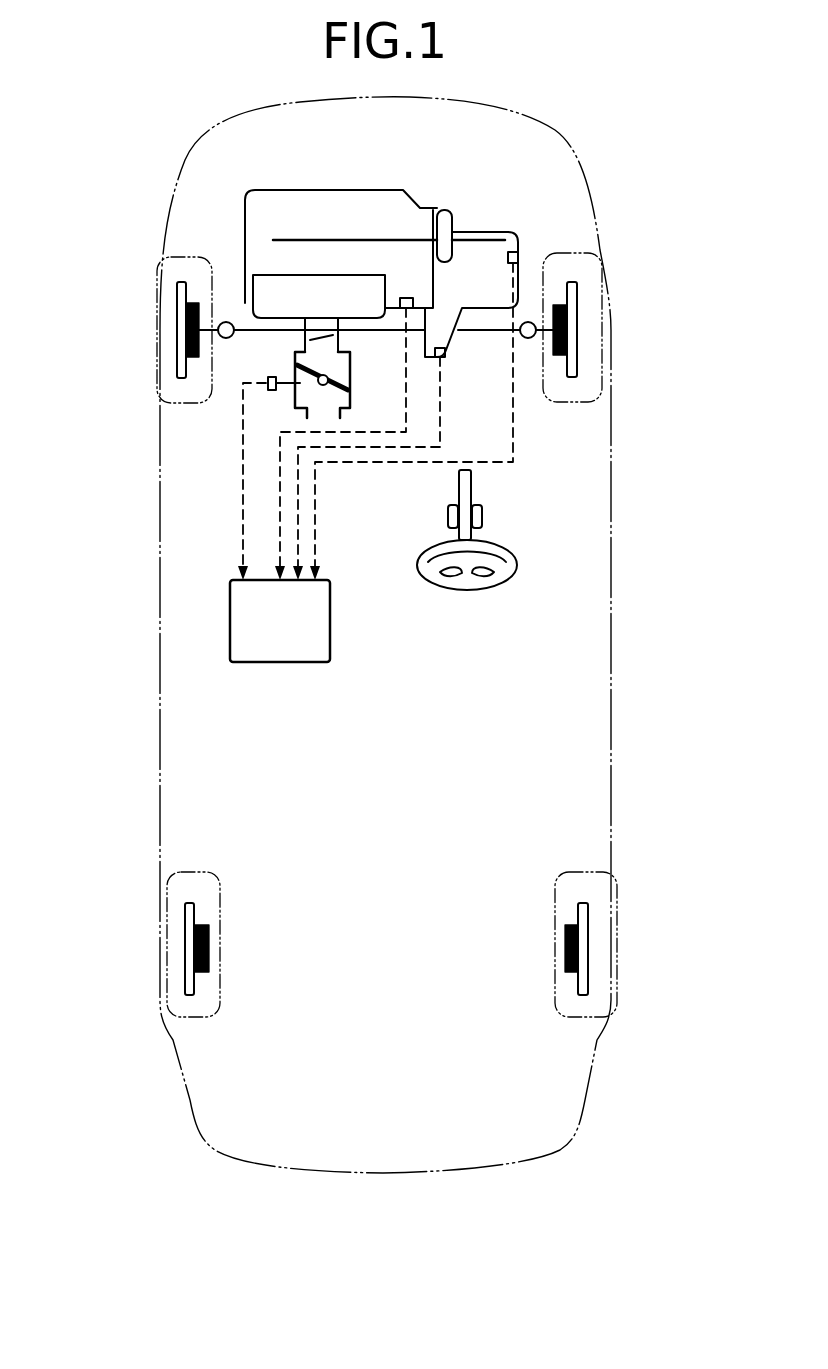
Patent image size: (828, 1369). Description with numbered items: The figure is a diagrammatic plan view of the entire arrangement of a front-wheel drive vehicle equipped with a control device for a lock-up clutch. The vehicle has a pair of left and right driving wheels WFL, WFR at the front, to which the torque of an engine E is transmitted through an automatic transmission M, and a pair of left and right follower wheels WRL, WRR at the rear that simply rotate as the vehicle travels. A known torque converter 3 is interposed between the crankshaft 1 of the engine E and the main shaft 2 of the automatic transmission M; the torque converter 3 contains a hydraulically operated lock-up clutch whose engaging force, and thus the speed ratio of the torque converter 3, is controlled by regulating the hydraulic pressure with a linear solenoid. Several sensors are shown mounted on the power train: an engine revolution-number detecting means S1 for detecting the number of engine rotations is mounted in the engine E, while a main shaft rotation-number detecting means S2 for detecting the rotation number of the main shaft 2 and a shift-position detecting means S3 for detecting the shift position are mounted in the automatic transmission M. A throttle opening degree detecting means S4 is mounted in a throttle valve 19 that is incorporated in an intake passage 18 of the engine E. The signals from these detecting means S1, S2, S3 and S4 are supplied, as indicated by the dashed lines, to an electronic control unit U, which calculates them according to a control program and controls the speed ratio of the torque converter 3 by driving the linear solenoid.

The crankshaft 1 is at (298, 238).
The main shaft 2 is at (465, 228).
The torque converter 3 is at (448, 212).
The intake passage 18 is at (300, 412).
The throttle valve 19 is at (330, 368).
The engine E is at (357, 182).
The automatic transmission M is at (480, 232).
The engine revolution-number detecting means S1 is at (405, 297).
The main shaft rotation-number detecting means S2 is at (508, 257).
The shift-position detecting means S3 is at (442, 358).
The throttle opening degree detecting means S4 is at (268, 378).
The electronic control unit U is at (287, 637).
The left front wheel WFL is at (152, 316).
The right front wheel WFR is at (604, 322).
The left rear follower wheel WRL is at (168, 917).
The right rear follower wheel WRR is at (608, 922).